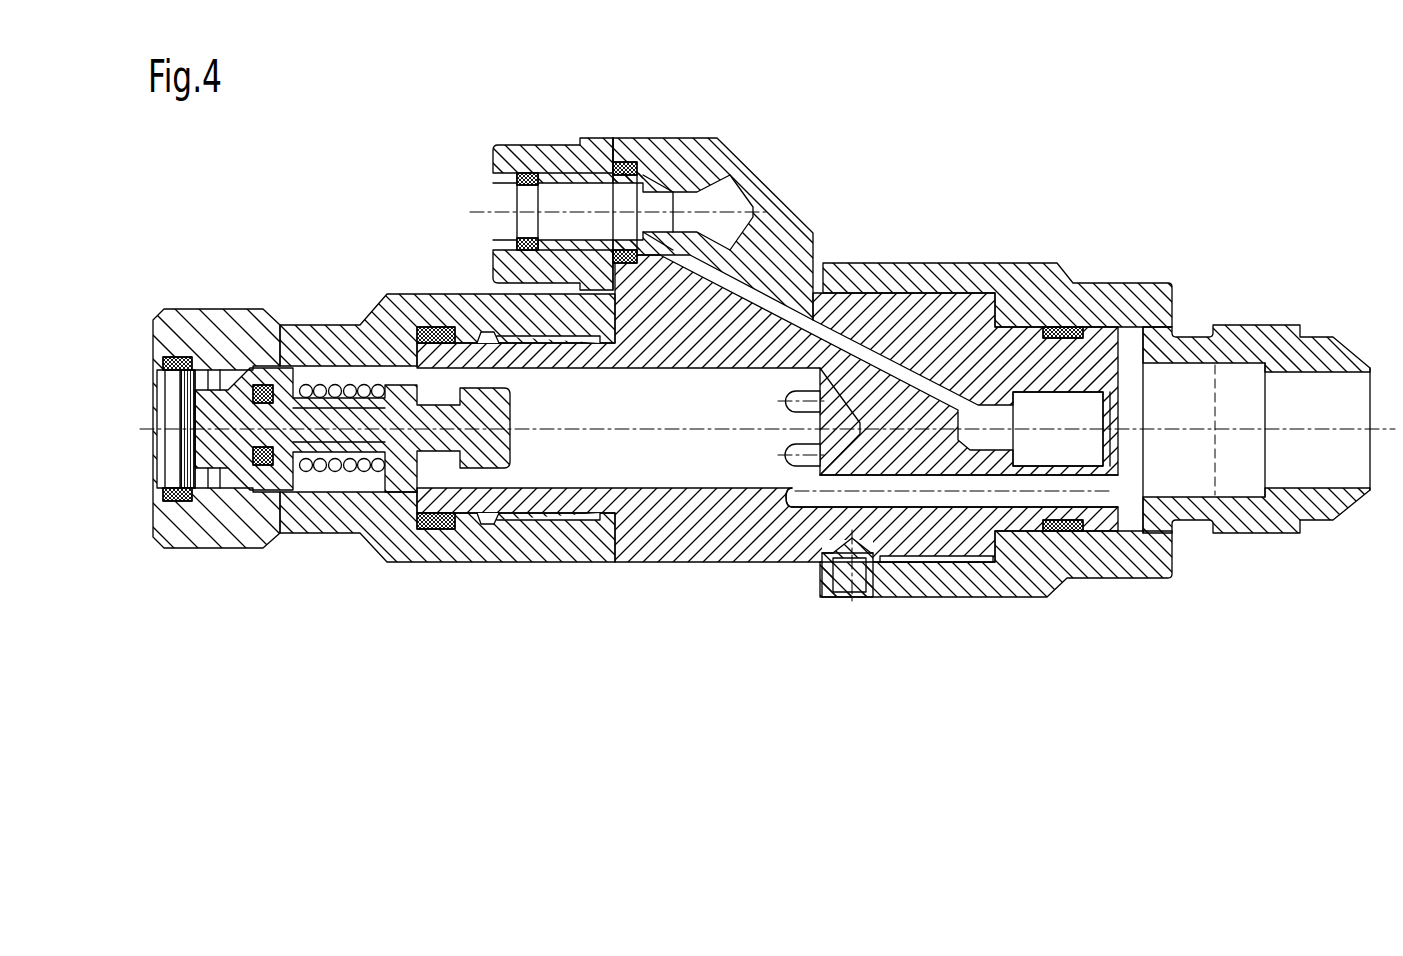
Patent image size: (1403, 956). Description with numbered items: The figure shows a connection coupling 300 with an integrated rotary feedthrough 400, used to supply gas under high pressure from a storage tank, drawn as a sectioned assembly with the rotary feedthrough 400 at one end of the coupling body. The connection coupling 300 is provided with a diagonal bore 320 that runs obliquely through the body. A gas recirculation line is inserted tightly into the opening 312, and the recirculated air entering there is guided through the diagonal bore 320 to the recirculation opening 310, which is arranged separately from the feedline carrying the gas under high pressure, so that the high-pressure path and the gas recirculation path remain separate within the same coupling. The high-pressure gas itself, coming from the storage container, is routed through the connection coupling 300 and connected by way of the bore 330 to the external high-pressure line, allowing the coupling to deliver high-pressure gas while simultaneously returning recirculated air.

The connection coupling 300 is at (850, 218).
The recirculation opening 310 is at (575, 205).
The opening 312 is at (1062, 405).
The diagonal bore 320 is at (937, 353).
The bore 330 is at (833, 494).
The rotary feedthrough 400 is at (1137, 280).